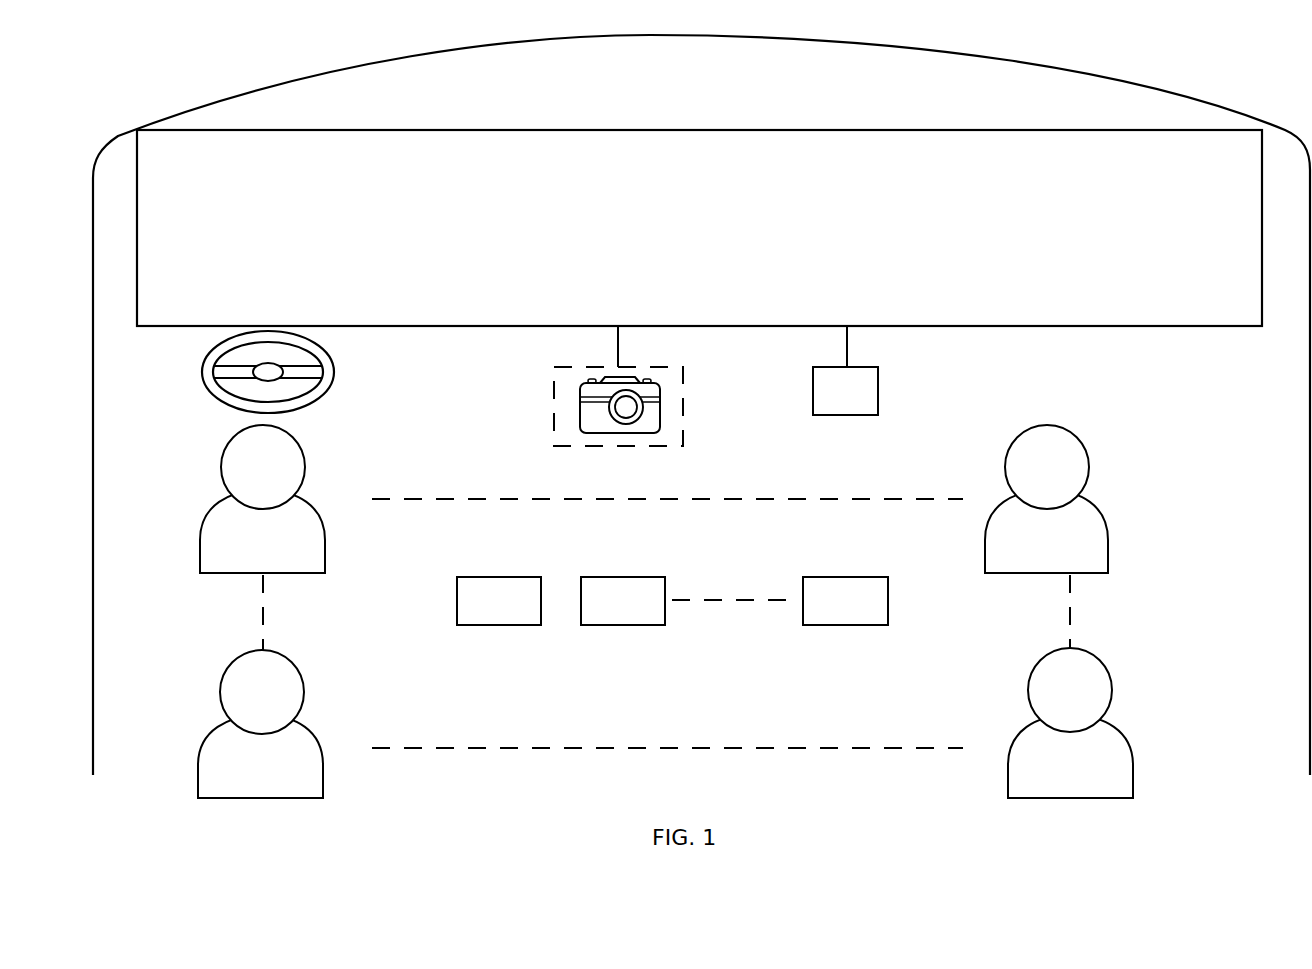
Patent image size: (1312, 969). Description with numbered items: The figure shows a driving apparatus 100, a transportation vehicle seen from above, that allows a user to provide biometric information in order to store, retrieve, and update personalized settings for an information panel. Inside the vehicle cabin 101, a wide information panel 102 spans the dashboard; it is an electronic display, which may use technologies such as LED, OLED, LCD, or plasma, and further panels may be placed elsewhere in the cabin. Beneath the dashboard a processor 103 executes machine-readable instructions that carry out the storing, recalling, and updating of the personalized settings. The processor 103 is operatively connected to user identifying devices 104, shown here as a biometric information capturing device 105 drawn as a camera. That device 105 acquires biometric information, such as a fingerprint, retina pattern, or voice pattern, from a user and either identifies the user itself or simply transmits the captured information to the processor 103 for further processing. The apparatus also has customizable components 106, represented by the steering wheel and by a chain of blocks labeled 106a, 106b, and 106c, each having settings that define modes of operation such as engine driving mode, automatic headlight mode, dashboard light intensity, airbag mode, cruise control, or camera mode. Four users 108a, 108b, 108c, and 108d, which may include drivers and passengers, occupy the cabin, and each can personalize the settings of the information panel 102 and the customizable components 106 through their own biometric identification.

The driving apparatus 100 is at (1190, 92).
The vehicle cabin 101 is at (712, 83).
The information panel 102 is at (773, 130).
The processor 103 is at (826, 398).
The user identifying devices 104 is at (683, 407).
The biometric information capturing device 105 is at (660, 385).
The customizable components 106 is at (333, 377).
The customizable component 106a is at (471, 613).
The customizable component 106b is at (595, 613).
The customizable component 106c is at (818, 613).
The user 108a is at (298, 450).
The user 108b is at (1075, 437).
The user 108c is at (300, 675).
The user 108d is at (1105, 667).